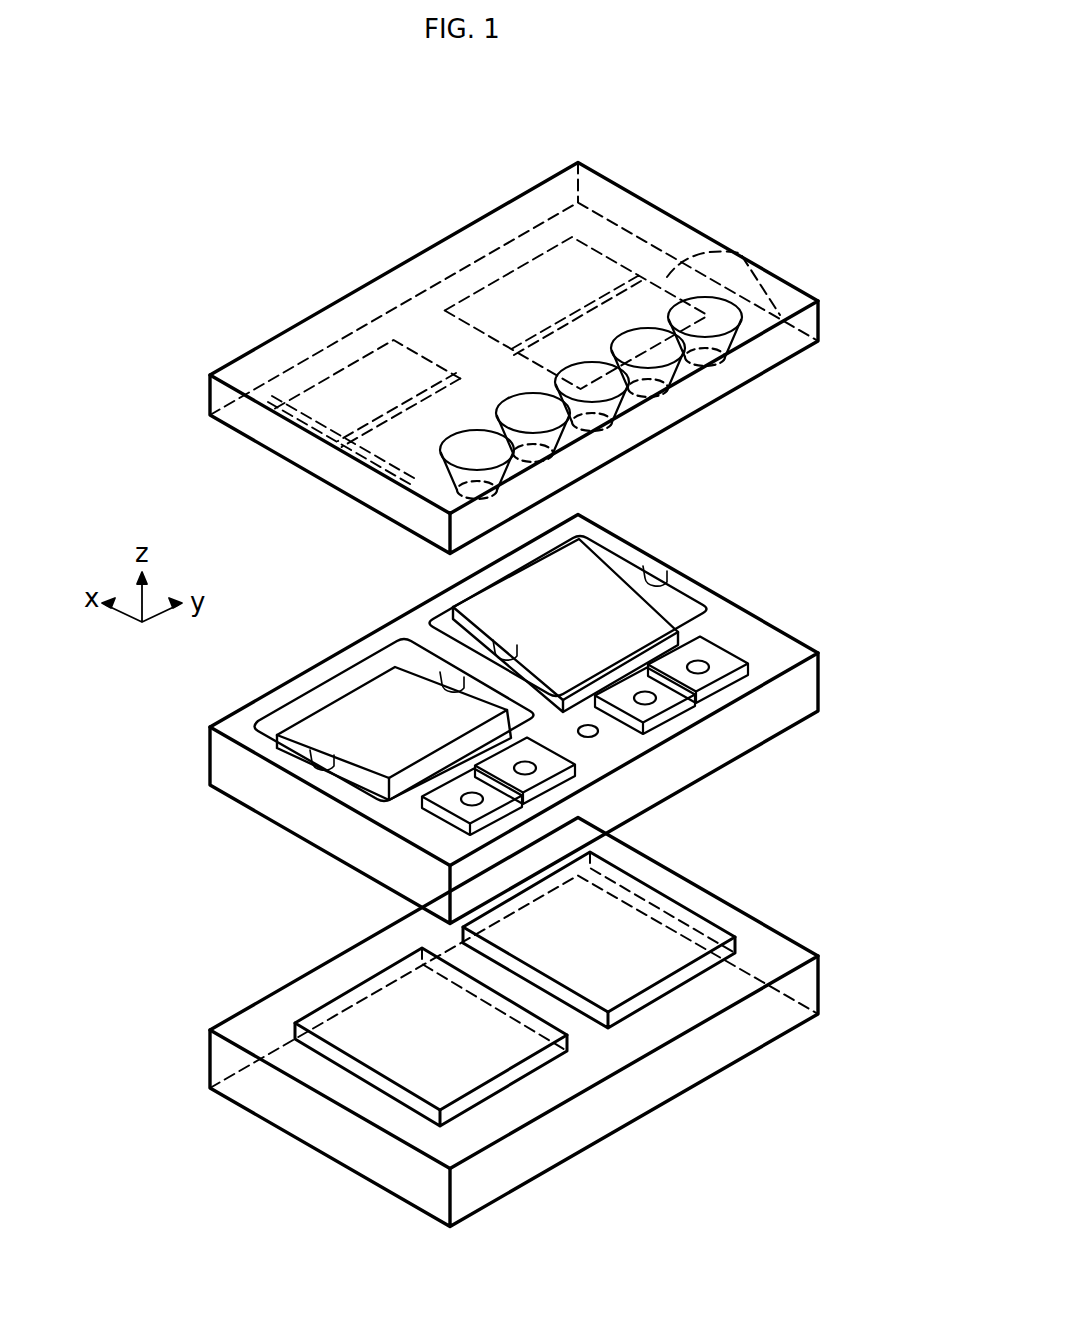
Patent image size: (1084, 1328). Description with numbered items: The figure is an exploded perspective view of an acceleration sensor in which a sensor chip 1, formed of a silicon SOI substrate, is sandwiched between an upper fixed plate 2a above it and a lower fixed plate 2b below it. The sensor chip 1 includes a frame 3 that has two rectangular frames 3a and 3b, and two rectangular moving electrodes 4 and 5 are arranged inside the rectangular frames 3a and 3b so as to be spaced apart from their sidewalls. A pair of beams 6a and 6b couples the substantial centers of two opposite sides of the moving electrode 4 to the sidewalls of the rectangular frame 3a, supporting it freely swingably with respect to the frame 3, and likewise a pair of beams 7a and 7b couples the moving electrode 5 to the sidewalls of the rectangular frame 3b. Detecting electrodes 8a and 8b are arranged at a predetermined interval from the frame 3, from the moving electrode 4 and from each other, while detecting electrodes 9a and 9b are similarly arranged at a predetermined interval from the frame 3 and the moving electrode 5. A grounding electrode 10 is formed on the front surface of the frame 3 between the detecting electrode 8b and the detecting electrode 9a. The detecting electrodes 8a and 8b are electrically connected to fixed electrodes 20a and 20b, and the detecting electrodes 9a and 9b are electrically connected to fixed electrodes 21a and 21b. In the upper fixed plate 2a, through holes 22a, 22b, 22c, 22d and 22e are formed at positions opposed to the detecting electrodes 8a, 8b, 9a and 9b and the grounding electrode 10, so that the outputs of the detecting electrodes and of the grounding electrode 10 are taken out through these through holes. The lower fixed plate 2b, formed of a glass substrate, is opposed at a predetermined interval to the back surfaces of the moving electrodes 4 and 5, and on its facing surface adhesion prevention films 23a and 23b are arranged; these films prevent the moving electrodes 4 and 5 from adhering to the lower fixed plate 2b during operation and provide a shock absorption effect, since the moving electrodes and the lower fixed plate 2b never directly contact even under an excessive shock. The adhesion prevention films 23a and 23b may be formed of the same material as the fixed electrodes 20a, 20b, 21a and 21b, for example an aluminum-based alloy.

The sensor chip 1 is at (774, 607).
The upper fixed plate 2a is at (820, 315).
The lower fixed plate 2b is at (818, 988).
The frame 3 is at (222, 760).
The rectangular frame 3a is at (371, 674).
The rectangular frame 3b is at (675, 609).
The moving electrode 4 is at (327, 722).
The moving electrode 5 is at (604, 590).
The beam 6a is at (305, 757).
The beam 6b is at (446, 682).
The beam 7a is at (512, 645).
The beam 7b is at (662, 562).
The detecting electrode 8a is at (440, 800).
The detecting electrode 8b is at (560, 770).
The detecting electrode 9a is at (662, 698).
The detecting electrode 9b is at (735, 660).
The grounding electrode 10 is at (600, 735).
The fixed electrode 20a is at (352, 472).
The fixed electrode 20b is at (327, 373).
The fixed electrode 21a is at (745, 253).
The fixed electrode 21b is at (515, 268).
The through hole 22a is at (545, 460).
The through hole 22b is at (600, 425).
The through hole 22c is at (705, 350).
The through hole 22d is at (768, 320).
The through hole 22e is at (650, 392).
The adhesion prevention film 23a is at (503, 1093).
The adhesion prevention film 23b is at (676, 992).